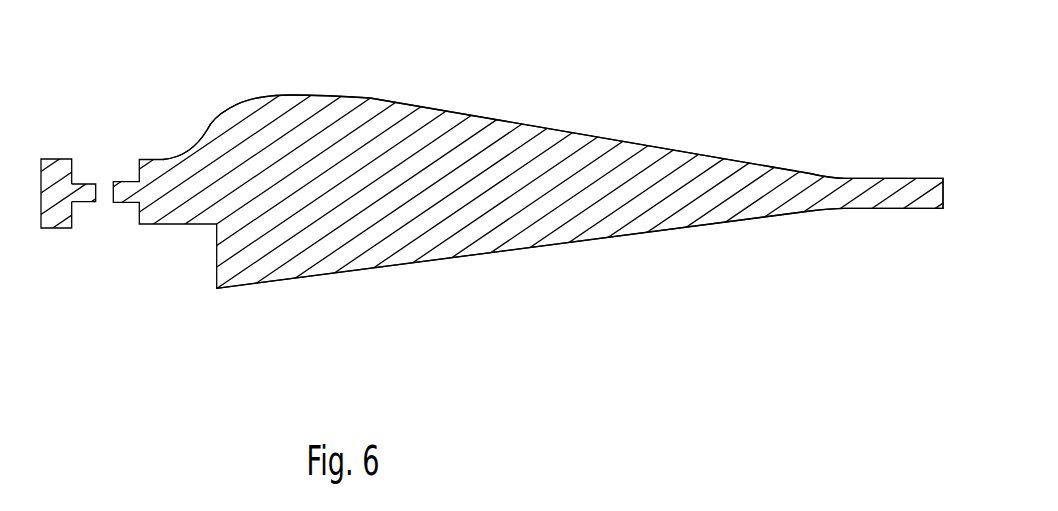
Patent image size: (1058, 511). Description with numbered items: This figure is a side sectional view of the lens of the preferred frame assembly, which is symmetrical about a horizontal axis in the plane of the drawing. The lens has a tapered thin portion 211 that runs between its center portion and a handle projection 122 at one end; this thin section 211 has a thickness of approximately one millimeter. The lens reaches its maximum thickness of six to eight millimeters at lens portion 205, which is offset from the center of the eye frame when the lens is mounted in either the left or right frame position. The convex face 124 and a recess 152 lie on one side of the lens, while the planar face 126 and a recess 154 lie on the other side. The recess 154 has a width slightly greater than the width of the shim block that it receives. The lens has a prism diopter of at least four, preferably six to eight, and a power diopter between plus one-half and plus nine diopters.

The convex face 124 is at (370, 97).
The lens portion 205 is at (272, 97).
The tapered thin portion 211 is at (752, 163).
The handle projection 122 is at (907, 177).
The planar face 126 is at (430, 263).
The recess 152 is at (73, 163).
The recess 154 is at (73, 213).